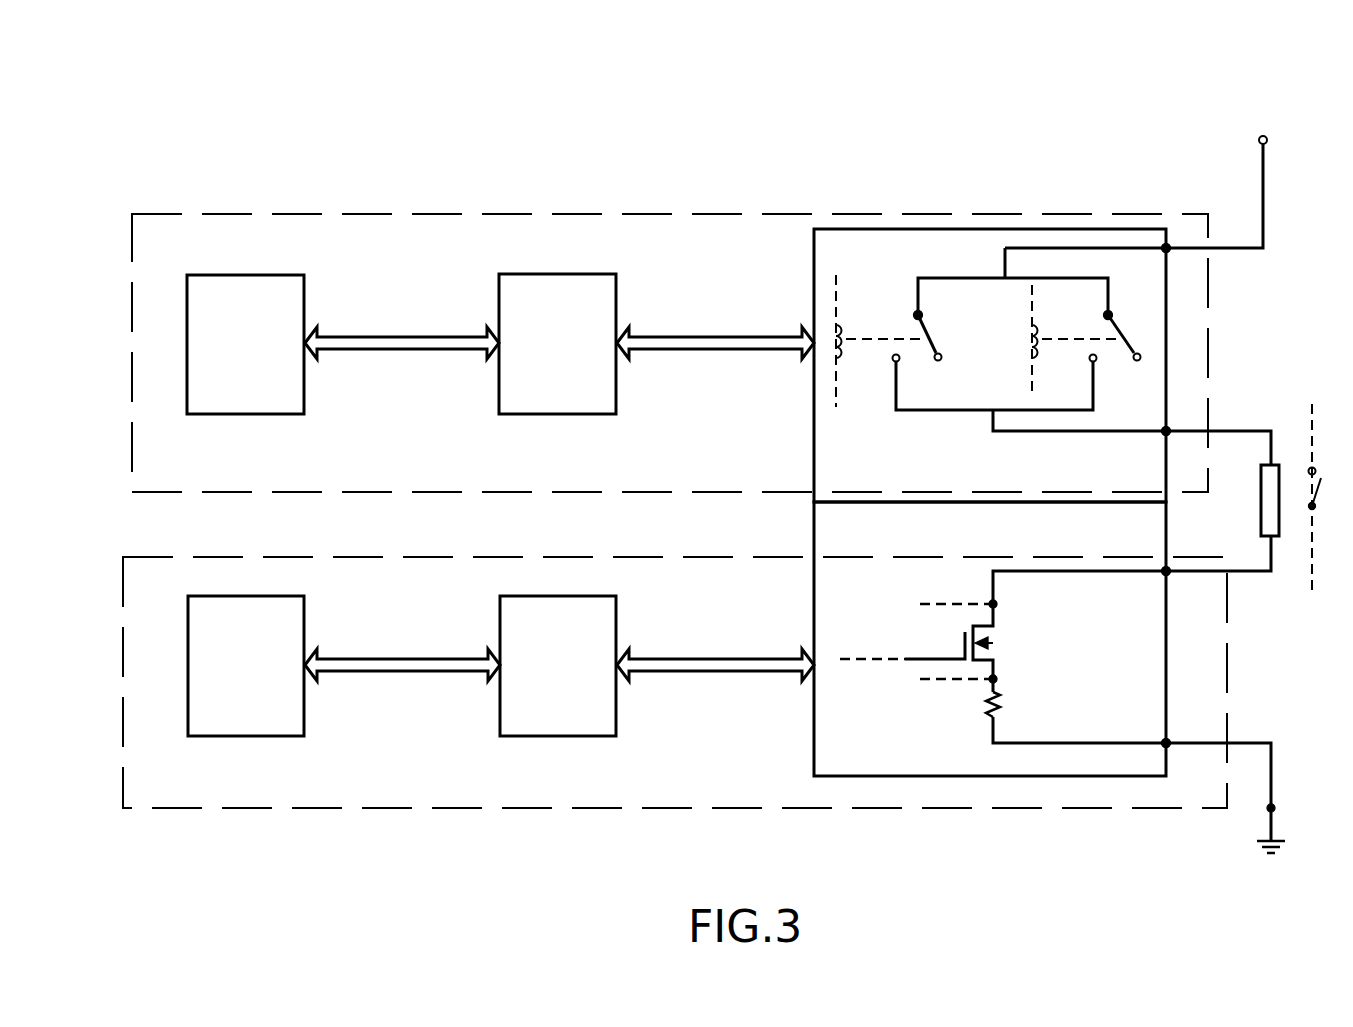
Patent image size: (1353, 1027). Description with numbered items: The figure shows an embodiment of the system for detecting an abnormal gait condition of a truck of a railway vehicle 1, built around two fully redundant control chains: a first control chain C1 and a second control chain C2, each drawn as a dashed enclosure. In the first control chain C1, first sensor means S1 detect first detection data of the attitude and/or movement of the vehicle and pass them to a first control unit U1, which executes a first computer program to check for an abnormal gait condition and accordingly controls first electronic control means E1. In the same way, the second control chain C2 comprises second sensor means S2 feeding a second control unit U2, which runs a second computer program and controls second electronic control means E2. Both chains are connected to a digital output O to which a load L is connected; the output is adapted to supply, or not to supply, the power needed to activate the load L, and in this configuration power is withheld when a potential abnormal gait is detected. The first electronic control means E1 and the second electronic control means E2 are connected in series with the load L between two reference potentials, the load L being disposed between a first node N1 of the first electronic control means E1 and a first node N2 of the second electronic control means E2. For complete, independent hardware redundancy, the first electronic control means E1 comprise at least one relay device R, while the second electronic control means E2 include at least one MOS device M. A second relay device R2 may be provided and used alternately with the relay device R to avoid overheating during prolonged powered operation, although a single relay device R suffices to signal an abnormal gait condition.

The railway vehicle 1 is at (1120, 119).
The first control chain C1 is at (373, 236).
The second control chain C2 is at (150, 582).
The first control unit U1 is at (283, 388).
The second control unit U2 is at (283, 713).
The first sensor means S1 is at (598, 291).
The second sensor means S2 is at (603, 622).
The first electronic control means E1 is at (823, 450).
The second electronic control means E2 is at (832, 718).
The relay device R is at (918, 315).
The second relay device R2 is at (1108, 315).
The first node of the first electronic control means N1 is at (1184, 416).
The first node of the second electronic control means N2 is at (1184, 588).
The digital output O is at (1167, 489).
The load L is at (1276, 530).
The MOS device M is at (990, 633).